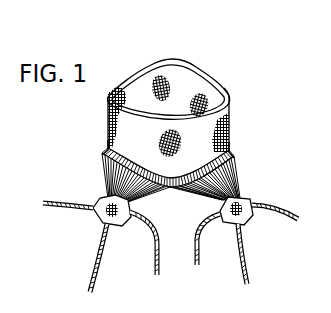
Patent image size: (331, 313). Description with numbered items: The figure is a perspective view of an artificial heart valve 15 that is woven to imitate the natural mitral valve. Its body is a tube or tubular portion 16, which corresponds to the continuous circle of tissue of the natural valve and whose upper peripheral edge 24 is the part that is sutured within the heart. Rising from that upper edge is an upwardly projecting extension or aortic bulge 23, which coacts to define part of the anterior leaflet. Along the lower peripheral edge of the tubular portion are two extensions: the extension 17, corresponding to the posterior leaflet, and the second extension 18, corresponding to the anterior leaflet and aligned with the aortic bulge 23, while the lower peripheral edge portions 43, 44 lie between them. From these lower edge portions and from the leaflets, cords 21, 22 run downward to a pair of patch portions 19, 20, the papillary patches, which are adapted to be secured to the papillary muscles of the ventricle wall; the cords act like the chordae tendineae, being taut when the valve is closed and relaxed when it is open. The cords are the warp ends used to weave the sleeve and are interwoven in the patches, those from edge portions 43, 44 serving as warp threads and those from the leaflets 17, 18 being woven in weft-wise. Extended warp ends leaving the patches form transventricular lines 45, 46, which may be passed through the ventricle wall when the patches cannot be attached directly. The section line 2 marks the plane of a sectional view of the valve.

The section line 2- 2 is at (150, 27).
The heart valve 15 is at (222, 83).
The tubular portion 16 is at (232, 124).
The extension 17 is at (110, 168).
The second extension 18 is at (170, 184).
The patch portion 19 is at (104, 222).
The patch portion 20 is at (247, 223).
The cord 21 is at (92, 212).
The cord 22 is at (229, 177).
The aortic bulge 23 is at (174, 70).
The upper peripheral edge 24 is at (231, 97).
The lower peripheral edge portion 43 is at (110, 151).
The lower peripheral edge portion 44 is at (229, 154).
The transventricular line 45 is at (105, 252).
The transventricular line 46 is at (202, 255).